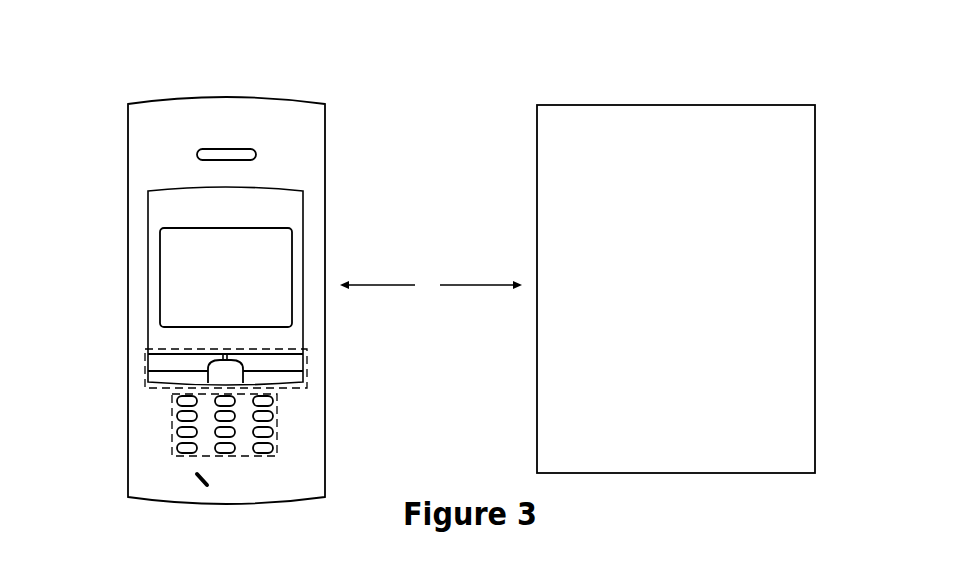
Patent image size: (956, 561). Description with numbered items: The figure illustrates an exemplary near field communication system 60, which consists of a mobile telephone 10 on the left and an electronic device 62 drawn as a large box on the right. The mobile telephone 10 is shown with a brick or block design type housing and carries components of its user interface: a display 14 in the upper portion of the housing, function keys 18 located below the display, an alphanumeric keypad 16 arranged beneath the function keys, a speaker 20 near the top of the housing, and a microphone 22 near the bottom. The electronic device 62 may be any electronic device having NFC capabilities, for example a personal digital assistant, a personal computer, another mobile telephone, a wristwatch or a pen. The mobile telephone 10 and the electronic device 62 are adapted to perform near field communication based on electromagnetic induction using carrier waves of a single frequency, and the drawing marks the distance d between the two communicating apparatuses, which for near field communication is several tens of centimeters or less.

The mobile telephone 10 is at (128, 156).
The display 14 is at (226, 277).
The alphanumeric keypad 16 is at (172, 424).
The function keys 18 is at (168, 367).
The speaker 20 is at (237, 149).
The microphone 22 is at (209, 484).
The near field communication system 60 is at (431, 106).
The electronic device 62 is at (676, 289).